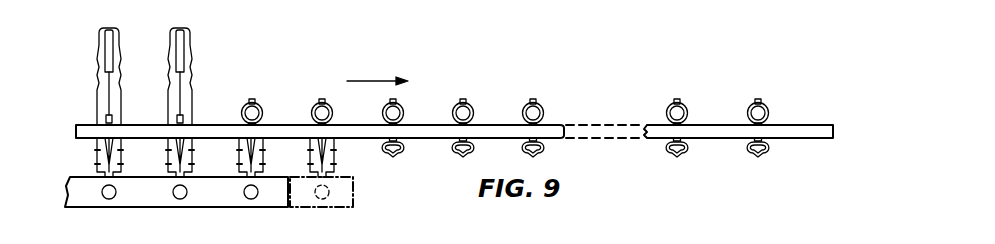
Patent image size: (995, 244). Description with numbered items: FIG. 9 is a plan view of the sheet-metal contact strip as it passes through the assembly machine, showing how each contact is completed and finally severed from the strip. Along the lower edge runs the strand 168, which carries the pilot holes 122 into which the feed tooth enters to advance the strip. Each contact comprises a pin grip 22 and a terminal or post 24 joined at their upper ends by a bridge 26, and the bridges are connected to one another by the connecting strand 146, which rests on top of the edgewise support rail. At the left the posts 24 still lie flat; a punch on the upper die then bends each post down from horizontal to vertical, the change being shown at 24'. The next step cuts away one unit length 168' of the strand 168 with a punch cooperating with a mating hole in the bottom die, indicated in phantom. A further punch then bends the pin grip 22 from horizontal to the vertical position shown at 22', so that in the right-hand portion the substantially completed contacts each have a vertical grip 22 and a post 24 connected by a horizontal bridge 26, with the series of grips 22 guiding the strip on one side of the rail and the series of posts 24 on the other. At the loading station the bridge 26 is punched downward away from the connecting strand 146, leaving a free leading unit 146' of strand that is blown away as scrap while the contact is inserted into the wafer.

The pin grip 22 is at (391, 160).
The pin grip in vertical position 22' is at (575, 165).
The terminal 24 is at (404, 76).
The post in vertical position 24' is at (505, 102).
The bridge 26 is at (542, 134).
The connecting strand 146 is at (423, 127).
The leading end unit of connecting strand 146' is at (801, 150).
The pilot hole 122 is at (174, 194).
The strand 168 is at (176, 207).
The unit length of connecting strand 168' is at (334, 208).